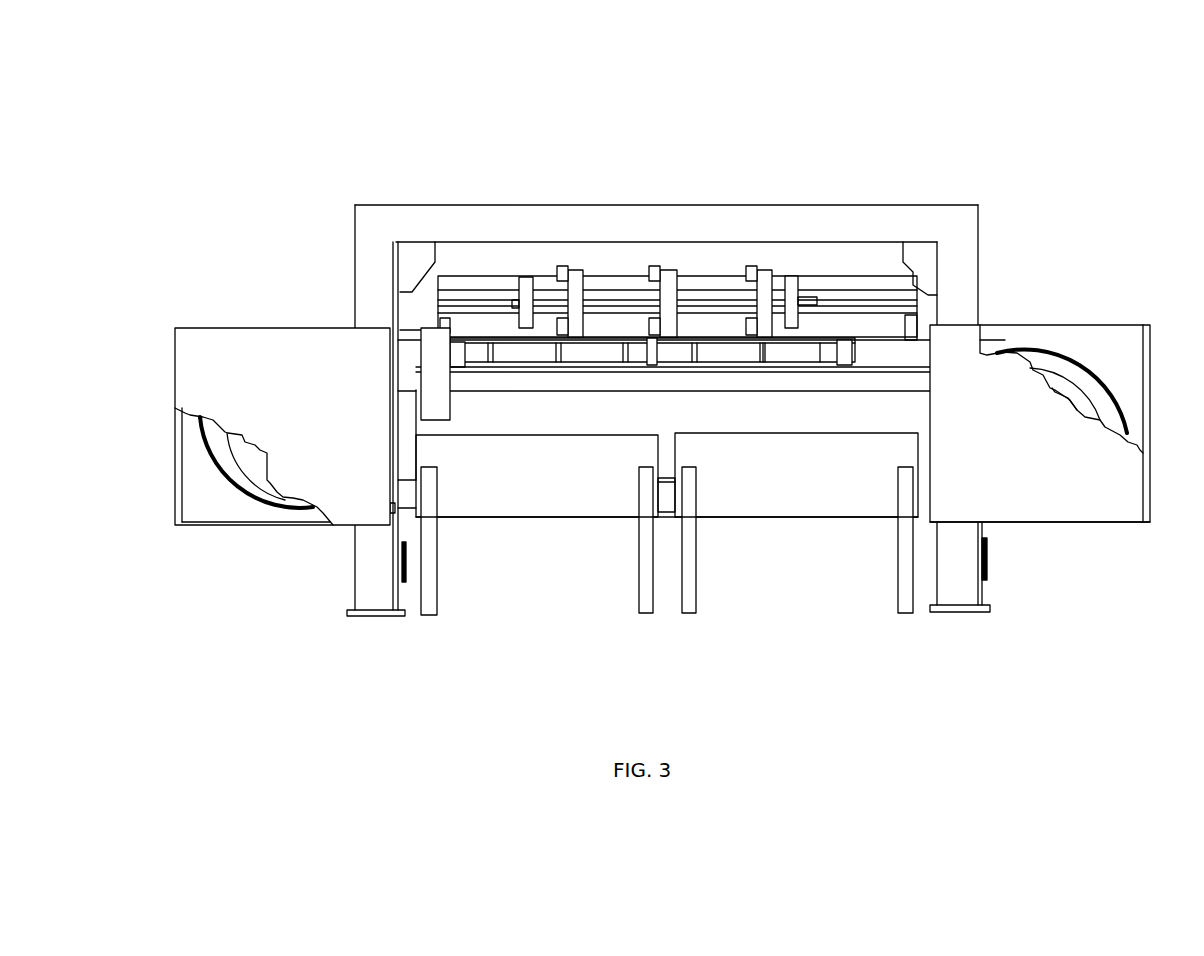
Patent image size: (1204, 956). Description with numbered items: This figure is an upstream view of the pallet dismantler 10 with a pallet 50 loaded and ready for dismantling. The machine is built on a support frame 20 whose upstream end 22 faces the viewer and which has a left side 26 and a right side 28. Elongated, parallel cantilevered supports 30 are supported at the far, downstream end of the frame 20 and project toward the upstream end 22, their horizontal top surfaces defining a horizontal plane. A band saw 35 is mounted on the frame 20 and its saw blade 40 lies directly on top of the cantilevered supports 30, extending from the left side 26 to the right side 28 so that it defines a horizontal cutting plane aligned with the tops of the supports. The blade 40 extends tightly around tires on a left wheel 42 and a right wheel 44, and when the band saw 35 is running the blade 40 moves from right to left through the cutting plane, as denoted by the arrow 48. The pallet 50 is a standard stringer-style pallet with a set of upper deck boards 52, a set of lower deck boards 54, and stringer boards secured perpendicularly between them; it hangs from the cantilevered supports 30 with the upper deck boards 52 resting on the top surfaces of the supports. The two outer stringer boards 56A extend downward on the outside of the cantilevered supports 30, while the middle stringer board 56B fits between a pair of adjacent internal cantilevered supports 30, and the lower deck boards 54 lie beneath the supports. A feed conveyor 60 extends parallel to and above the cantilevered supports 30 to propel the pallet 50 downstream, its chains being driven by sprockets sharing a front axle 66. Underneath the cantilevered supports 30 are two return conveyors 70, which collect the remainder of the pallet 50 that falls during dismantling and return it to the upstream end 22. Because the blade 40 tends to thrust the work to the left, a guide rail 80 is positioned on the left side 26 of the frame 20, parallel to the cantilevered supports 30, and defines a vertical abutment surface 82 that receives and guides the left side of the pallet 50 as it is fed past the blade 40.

The pallet dismantler 10 is at (889, 150).
The support frame 20 is at (988, 590).
The upstream end 22 is at (498, 503).
The left side 26 is at (353, 240).
The right side 28 is at (983, 205).
The cantilevered supports 30 is at (820, 348).
The band saw 35 is at (1070, 532).
The saw blade 40 is at (888, 333).
The left wheel 42 is at (225, 477).
The right wheel 44 is at (1097, 350).
The arrow 48 is at (1065, 333).
The pallet 50 is at (740, 372).
The upper deck boards 52 is at (497, 335).
The lower deck boards 54 is at (575, 370).
The outer stringer boards 56A is at (455, 368).
The middle stringer board 56B is at (657, 368).
The feed conveyor 60 is at (624, 270).
The front axle 66 is at (816, 300).
The return conveyors 70 is at (598, 517).
The guide rail 80 is at (431, 420).
The vertical abutment surface 82 is at (450, 332).